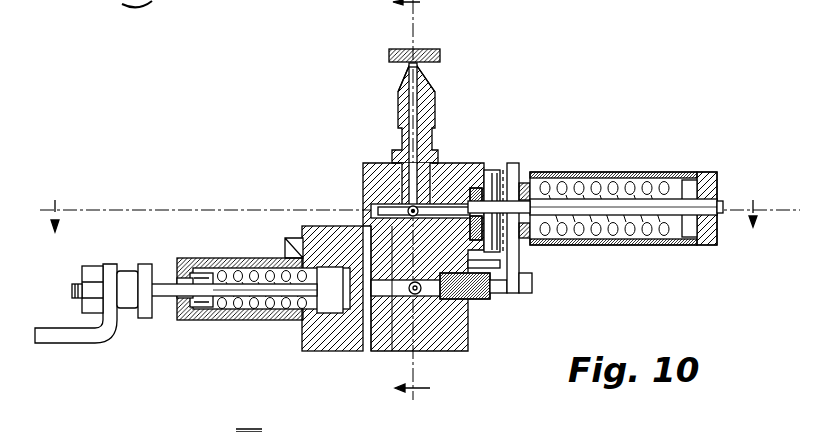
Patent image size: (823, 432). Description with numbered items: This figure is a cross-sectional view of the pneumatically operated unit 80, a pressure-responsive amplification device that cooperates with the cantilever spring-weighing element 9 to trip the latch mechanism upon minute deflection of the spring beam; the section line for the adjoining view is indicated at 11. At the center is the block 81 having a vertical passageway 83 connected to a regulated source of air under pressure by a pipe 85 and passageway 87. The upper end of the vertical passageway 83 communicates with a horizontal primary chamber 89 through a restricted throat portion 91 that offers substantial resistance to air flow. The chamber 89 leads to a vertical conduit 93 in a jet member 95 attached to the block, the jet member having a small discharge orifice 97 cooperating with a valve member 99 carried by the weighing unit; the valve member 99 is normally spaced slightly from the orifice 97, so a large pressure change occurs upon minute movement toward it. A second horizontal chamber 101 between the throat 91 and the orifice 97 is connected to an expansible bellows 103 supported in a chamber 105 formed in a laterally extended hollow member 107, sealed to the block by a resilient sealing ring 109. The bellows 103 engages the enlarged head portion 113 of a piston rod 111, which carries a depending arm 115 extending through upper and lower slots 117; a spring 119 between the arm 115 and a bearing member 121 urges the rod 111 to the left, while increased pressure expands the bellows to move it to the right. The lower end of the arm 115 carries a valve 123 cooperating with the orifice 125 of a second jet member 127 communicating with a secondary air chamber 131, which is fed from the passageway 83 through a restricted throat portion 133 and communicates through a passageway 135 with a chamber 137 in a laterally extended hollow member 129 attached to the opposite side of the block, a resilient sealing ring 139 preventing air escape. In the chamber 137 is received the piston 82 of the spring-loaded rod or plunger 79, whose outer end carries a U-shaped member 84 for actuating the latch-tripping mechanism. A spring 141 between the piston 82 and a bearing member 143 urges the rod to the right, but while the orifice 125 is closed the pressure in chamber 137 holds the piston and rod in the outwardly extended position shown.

The spring-loaded rod or plunger 79 is at (163, 283).
The pneumatically operated unit 80 is at (554, 104).
The block 81 is at (392, 203).
The piston 82 is at (300, 349).
The vertical passageway 83 is at (330, 290).
The U-shaped member 84 is at (58, 330).
The pipe 85 is at (300, 240).
The passageway 87 is at (392, 220).
The horizontal chamber 89 is at (406, 208).
The restricted throat portion 91 is at (410, 212).
The vertical conduit 93 is at (408, 116).
The jet member 95 is at (432, 92).
The discharge orifice 97 is at (408, 67).
The valve member 99 is at (431, 49).
The second horizontal chamber 101 is at (452, 200).
The expansible bellows 103 is at (498, 190).
The chamber 105 is at (534, 172).
The laterally extended hollow member 107 is at (606, 178).
The resilient sealing ring 109 is at (472, 195).
The piston rod 111 is at (652, 240).
The enlarged head portion 113 is at (522, 165).
The depending arm 115 is at (530, 270).
The slots 117 is at (522, 258).
The spring 119 is at (645, 183).
The bearing member 121 is at (700, 174).
The valve 123 is at (513, 294).
The orifice 125 is at (490, 298).
The second jet member 127 is at (476, 300).
The laterally extended hollow member 129 is at (235, 262).
The secondary air chamber 131 is at (418, 294).
The restricted throat portion 133 is at (422, 292).
The through passageway 135 is at (397, 353).
The chamber 137 is at (360, 351).
The resilient sealing ring 139 is at (340, 222).
The spring 141 is at (270, 320).
The bearing member 143 is at (205, 310).
The cantilever spring-weighing element 9 is at (403, 205).
The section line 11- 11 is at (411, 209).